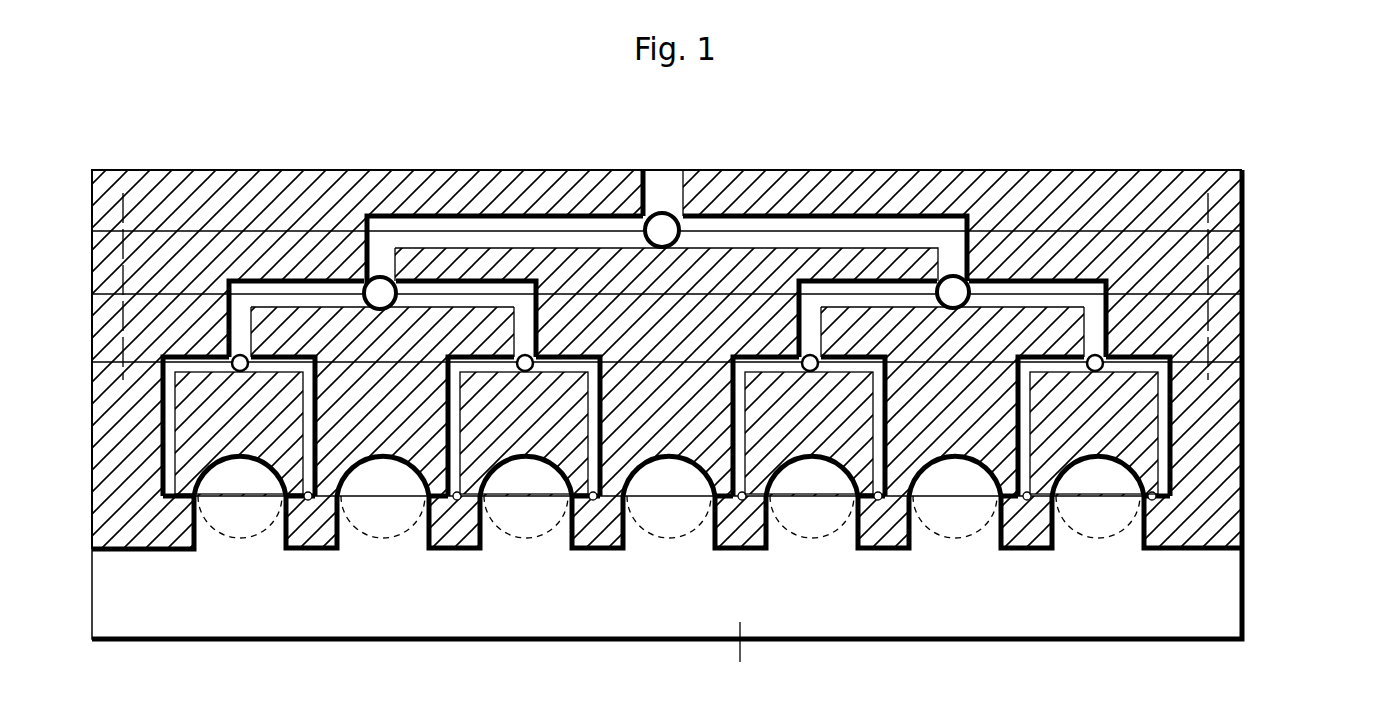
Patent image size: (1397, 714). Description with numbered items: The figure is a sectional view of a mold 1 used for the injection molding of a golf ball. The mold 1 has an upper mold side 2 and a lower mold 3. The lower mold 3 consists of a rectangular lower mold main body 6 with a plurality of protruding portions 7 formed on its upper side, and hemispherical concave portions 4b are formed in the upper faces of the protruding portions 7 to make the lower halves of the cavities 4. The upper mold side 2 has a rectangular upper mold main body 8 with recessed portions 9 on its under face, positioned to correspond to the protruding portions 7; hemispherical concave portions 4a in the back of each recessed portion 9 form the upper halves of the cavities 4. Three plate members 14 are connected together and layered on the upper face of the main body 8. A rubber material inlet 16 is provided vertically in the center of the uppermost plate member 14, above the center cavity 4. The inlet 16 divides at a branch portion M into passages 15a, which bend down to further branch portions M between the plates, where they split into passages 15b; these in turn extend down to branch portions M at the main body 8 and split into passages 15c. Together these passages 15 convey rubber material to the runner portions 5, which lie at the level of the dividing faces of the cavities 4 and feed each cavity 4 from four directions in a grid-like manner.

The mold 1 is at (1266, 517).
The upper mold side 2 is at (735, 359).
The lower mold 3 is at (1249, 592).
The cavities 4 is at (232, 492).
The hemispherical concave portions 4a is at (405, 472).
The hemispherical concave portions 4b is at (360, 538).
The runner portions 5 is at (300, 533).
The lower mold main body 6 is at (740, 657).
The protruding portions 7 is at (192, 517).
The upper mold main body 8 is at (1230, 423).
The recessed portions 9 is at (197, 533).
The plate members 14 is at (1243, 202).
The passages 15 is at (666, 302).
The passages 15a is at (510, 222).
The passages 15b is at (1030, 278).
The passages 15c is at (878, 442).
The rubber material inlet 16 is at (662, 186).
The branch portion M is at (643, 206).